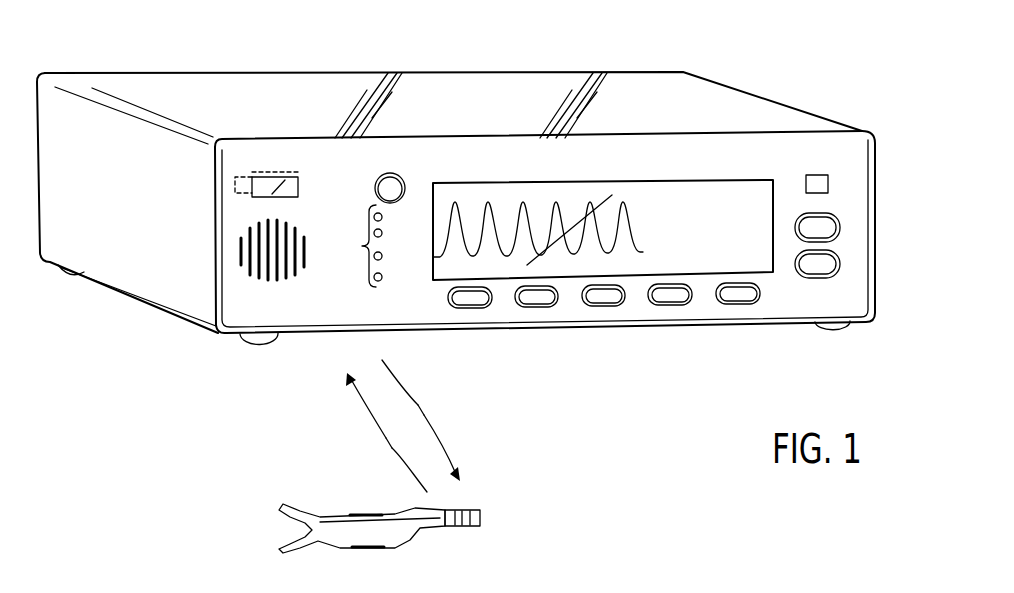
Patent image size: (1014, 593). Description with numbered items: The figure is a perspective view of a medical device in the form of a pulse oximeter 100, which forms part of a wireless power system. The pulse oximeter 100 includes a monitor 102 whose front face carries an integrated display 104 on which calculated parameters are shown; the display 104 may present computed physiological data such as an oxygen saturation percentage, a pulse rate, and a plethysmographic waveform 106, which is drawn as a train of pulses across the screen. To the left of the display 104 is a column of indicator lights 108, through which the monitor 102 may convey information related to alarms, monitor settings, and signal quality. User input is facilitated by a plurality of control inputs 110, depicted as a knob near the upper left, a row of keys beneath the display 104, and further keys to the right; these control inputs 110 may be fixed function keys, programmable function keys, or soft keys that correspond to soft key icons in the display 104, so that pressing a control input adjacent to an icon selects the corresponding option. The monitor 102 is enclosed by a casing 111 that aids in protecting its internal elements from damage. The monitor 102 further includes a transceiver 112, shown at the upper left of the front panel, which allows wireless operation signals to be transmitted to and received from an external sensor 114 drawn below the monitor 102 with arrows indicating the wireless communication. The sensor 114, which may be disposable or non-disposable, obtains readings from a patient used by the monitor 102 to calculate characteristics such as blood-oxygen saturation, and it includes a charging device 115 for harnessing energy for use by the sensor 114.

The pulse oximeter 100 is at (781, 90).
The monitor 102 is at (175, 68).
The display 104 is at (582, 190).
The plethysmographic waveform 106 is at (483, 207).
The indicator lights 108 is at (362, 246).
The control inputs 110 is at (391, 170).
The casing 111 is at (800, 115).
The transceiver 112 is at (288, 178).
The sensor 114 is at (328, 505).
The charging device 115 is at (462, 513).